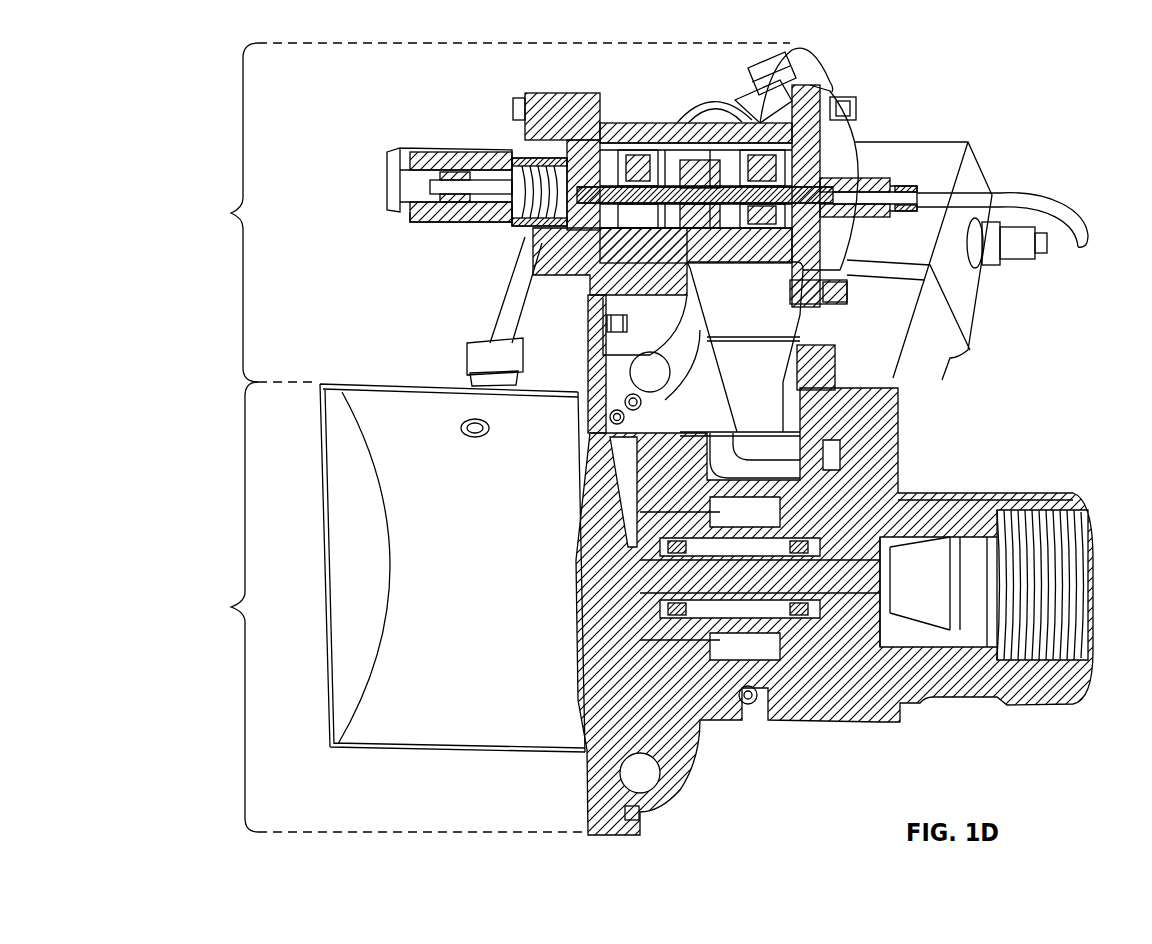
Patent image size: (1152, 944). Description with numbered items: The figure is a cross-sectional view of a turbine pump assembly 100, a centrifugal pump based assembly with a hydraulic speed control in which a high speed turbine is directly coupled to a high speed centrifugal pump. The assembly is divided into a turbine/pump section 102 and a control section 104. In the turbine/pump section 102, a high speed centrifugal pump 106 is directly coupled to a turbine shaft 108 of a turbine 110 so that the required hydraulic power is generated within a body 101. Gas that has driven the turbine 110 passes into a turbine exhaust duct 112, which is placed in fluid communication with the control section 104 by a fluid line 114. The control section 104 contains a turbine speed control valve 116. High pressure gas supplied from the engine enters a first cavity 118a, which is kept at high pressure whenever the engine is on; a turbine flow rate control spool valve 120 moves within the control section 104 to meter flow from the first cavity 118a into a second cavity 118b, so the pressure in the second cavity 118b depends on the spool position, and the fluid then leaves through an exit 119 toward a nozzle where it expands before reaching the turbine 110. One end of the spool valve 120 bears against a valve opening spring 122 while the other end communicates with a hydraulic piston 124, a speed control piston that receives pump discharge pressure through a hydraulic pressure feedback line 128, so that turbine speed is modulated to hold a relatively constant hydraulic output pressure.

The turbine pump assembly 100 is at (1062, 150).
The body 101 is at (915, 455).
The turbine/pump section 102 is at (383, 607).
The control section 104 is at (489, 212).
The high speed centrifugal pump 106 is at (905, 640).
The turbine shaft 108 is at (752, 622).
The turbine 110 is at (582, 597).
The turbine exhaust duct 112 is at (418, 577).
The fluid line 114 is at (505, 320).
The turbine speed control valve 116 is at (385, 178).
The first cavity 118a is at (740, 116).
The second cavity 118b is at (698, 180).
The exit 119 is at (690, 252).
The turbine flow rate control spool valve 120 is at (652, 183).
The valve opening spring 122 is at (515, 212).
The hydraulic piston 124 is at (850, 190).
The hydraulic pressure feedback line 128 is at (1085, 248).